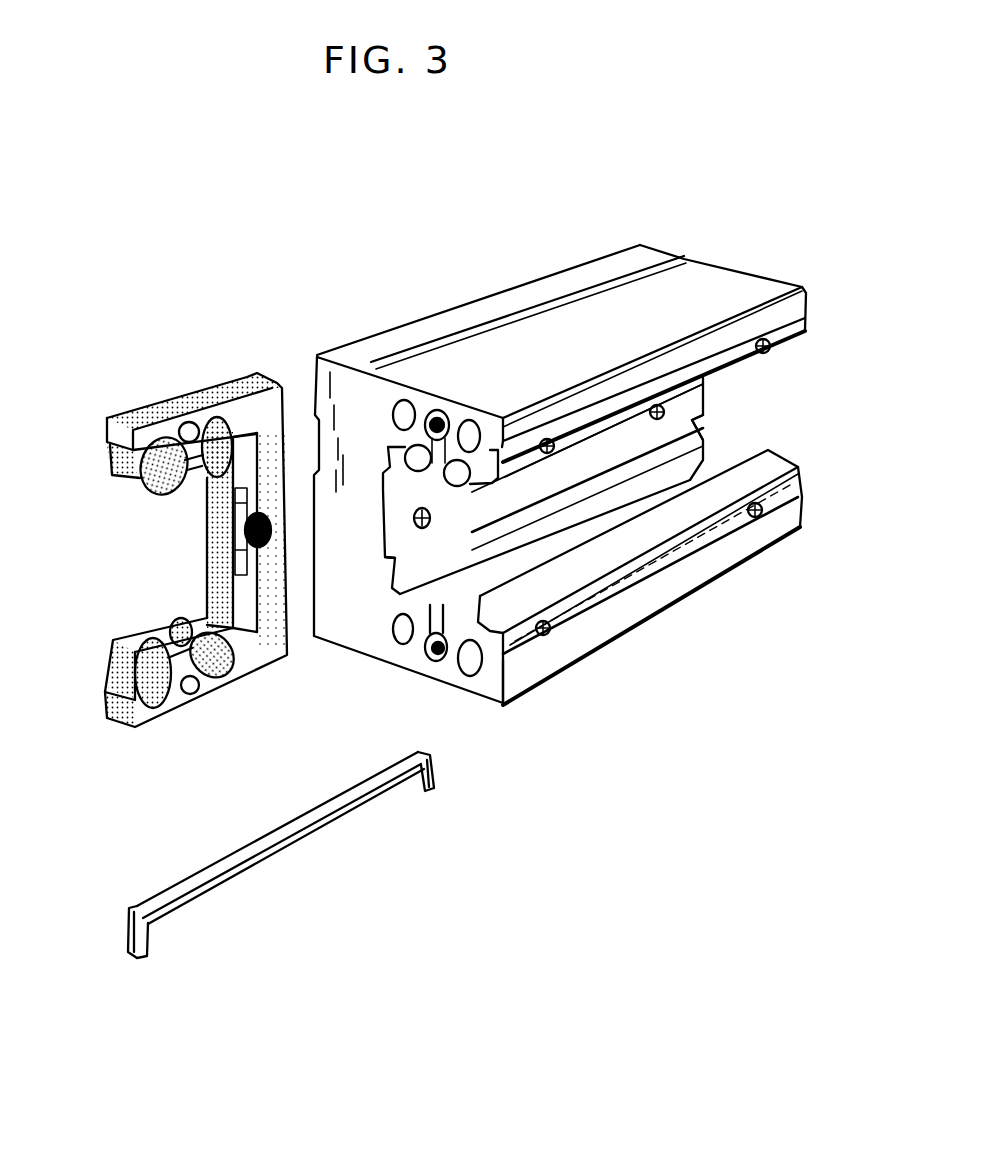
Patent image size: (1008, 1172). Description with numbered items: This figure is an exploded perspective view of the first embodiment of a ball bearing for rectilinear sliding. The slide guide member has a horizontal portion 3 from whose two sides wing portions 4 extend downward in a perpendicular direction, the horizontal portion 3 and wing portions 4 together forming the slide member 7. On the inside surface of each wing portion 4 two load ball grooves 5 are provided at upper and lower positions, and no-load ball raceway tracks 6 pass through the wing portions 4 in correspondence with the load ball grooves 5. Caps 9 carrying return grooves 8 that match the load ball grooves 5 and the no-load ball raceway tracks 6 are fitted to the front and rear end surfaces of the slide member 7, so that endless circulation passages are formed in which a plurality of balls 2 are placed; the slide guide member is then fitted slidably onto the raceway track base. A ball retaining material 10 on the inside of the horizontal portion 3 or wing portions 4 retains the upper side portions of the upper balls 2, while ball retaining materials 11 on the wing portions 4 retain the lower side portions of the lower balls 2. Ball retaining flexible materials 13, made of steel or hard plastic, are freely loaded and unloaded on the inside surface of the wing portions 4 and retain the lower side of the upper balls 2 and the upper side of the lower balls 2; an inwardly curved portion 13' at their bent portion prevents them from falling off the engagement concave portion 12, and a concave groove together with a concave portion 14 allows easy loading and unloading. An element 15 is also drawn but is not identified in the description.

The slide member 7 is at (480, 282).
The horizontal portion 3 is at (323, 378).
The balls 2 is at (403, 443).
The wing portions 4 is at (724, 286).
The load ball grooves 5 is at (708, 471).
The no-load ball raceway tracks 6 is at (392, 634).
The return grooves 8 is at (145, 490).
The caps 9 is at (240, 382).
The ball retaining material 10 is at (378, 563).
The ball retaining materials 11 is at (795, 334).
The engagement concave portion 12 is at (426, 633).
The ball retaining flexible materials 13 is at (280, 838).
The curved portion 13' is at (290, 637).
The concave portion 14 is at (743, 399).
The pin 15 is at (192, 480).